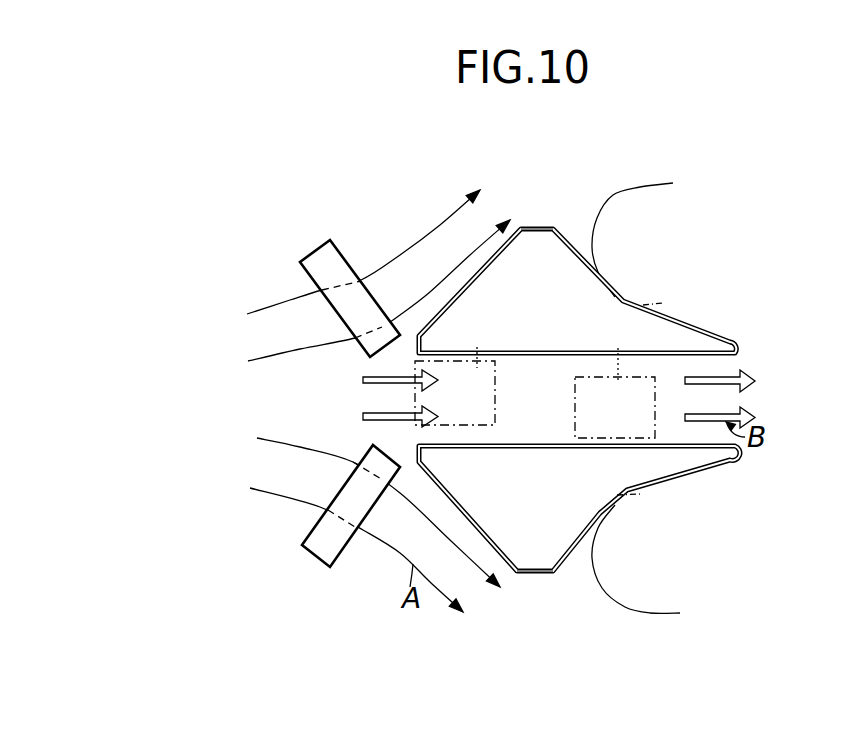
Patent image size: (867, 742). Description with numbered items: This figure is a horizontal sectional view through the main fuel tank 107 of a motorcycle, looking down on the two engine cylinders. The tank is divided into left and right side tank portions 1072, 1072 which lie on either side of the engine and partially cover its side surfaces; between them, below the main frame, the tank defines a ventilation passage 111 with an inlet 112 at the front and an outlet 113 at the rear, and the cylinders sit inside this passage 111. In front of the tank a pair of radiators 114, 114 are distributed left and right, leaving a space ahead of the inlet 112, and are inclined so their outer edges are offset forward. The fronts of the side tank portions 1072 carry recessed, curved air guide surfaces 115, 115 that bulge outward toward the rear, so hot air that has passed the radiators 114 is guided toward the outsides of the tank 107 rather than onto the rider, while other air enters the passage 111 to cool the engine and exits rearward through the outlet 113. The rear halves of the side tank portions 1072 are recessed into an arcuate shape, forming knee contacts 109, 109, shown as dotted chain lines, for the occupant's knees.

The main fuel tank 107 is at (717, 314).
The side tank portion 1072 is at (537, 591).
The knee contact 109 is at (683, 316).
The ventilation passage 111 is at (538, 410).
The inlet 112 is at (425, 432).
The outlet 113 is at (712, 364).
The radiator 114 is at (340, 262).
The air guide surface 115 is at (481, 279).